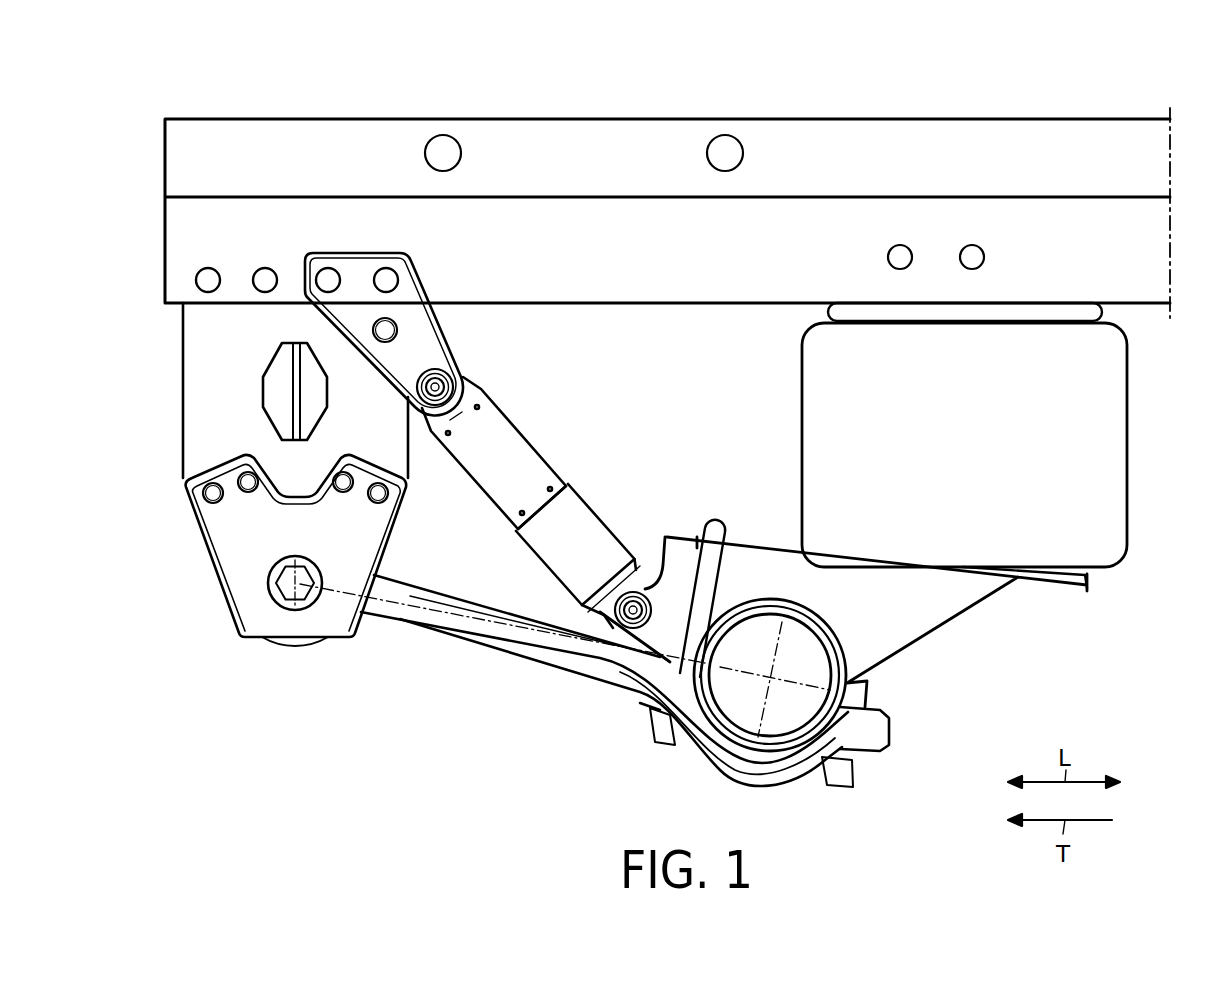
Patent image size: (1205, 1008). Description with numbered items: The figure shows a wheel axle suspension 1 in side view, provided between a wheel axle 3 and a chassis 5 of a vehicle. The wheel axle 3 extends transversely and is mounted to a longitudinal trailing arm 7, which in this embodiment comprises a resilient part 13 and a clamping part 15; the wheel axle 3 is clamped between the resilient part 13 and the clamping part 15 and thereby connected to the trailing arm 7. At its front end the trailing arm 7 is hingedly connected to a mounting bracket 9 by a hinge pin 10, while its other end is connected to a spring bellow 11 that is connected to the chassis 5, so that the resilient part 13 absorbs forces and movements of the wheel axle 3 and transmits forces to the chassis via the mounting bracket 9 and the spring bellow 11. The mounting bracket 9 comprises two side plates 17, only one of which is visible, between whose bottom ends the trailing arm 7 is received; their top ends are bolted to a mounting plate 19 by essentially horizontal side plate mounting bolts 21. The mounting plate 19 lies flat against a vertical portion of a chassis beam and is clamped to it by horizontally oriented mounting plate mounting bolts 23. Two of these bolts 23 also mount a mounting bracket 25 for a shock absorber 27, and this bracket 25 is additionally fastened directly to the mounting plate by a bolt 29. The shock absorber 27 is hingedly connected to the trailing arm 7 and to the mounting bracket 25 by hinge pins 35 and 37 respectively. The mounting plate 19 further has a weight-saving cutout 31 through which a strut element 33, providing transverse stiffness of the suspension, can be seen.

The wheel axle suspension 1 is at (420, 715).
The wheel axle 3 is at (775, 670).
The chassis 5 is at (583, 142).
The trailing arm 7 is at (862, 722).
The mounting bracket 9 is at (180, 561).
The hinge pin 10 is at (283, 600).
The spring bellow 11 is at (1110, 444).
The resilient part 13 is at (504, 645).
The clamping part 15 is at (933, 617).
The side plate 17 is at (240, 594).
The mounting plate 19 is at (193, 388).
The side plate mounting bolts 21 is at (213, 496).
The mounting plate mounting bolts 23 is at (386, 269).
The mounting bracket for shock absorber 25 is at (418, 338).
The shock absorber 27 is at (515, 442).
The bolt 29 is at (384, 335).
The weight-saving cutout 31 is at (272, 391).
The strut element 33 is at (294, 405).
The hinge pin 35 is at (632, 578).
The hinge pin 37 is at (450, 377).